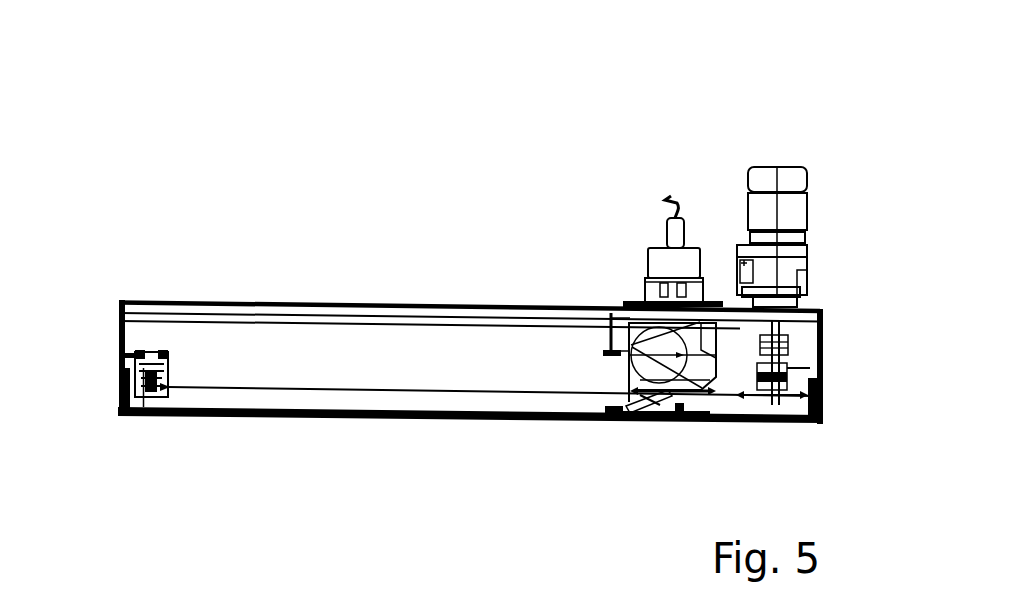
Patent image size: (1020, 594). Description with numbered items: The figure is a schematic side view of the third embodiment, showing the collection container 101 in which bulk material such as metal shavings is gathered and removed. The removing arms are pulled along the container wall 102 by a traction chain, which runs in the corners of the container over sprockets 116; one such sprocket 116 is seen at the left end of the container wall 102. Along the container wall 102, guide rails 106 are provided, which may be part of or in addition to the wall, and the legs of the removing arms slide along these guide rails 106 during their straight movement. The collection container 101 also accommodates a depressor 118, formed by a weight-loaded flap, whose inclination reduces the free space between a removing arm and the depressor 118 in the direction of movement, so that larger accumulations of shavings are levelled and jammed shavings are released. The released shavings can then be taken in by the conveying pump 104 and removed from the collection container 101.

The collection container 101 is at (301, 236).
The container wall 102 is at (120, 350).
The conveying pump 104 is at (678, 417).
The guide rails 106 is at (822, 395).
The sprockets 116 is at (152, 399).
The depressor 118 is at (638, 417).